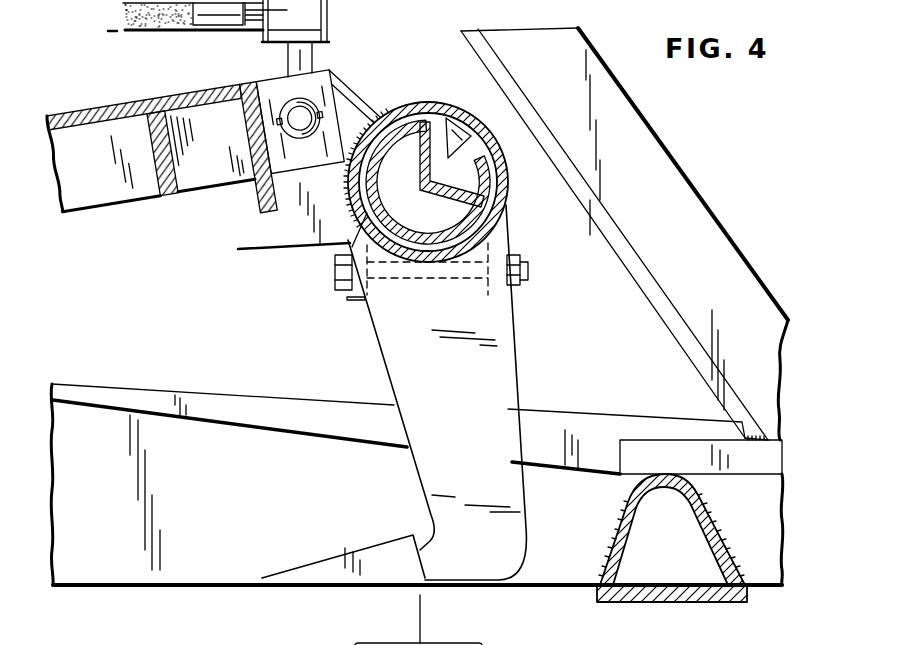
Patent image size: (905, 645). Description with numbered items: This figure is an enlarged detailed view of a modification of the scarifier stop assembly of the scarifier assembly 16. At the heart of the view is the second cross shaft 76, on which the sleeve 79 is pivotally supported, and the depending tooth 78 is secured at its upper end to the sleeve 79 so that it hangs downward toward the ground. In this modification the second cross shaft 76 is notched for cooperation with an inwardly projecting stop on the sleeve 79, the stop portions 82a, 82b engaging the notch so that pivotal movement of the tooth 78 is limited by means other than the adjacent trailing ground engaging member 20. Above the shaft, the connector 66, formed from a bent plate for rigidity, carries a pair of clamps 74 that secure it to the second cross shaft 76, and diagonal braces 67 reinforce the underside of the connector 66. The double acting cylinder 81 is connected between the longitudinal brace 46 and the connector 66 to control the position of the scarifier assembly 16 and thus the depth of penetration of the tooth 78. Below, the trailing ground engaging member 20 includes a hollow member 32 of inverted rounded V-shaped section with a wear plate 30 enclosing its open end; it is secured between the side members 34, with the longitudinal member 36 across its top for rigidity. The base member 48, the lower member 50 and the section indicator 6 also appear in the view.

The double acting cylinder 81 is at (328, 20).
The connector 66 is at (118, 240).
The diagonal braces 67 is at (185, 196).
The scarifier assembly 16 is at (406, 94).
The sleeve 79 is at (434, 102).
The key member 82a is at (466, 188).
The key tab 82b is at (459, 143).
The second cross shaft 76 is at (433, 242).
The clamps 74 is at (349, 299).
The tooth 78 is at (492, 367).
The side member 34 is at (233, 390).
The base plate 48 is at (417, 615).
The longitudinal member 36 is at (653, 440).
The longitudinal brace 46 is at (686, 194).
The hollow member 32 is at (604, 529).
The trailing ground engaging member 20 is at (734, 531).
The wear plate 30 is at (668, 604).
The lower member 50 is at (370, 641).
The section line 6 is at (434, 612).